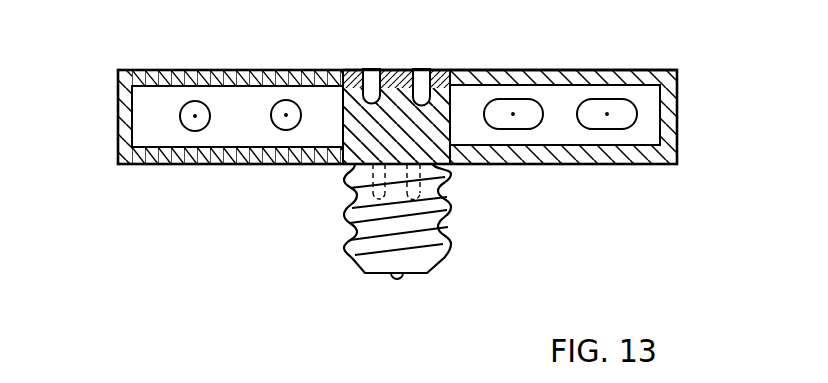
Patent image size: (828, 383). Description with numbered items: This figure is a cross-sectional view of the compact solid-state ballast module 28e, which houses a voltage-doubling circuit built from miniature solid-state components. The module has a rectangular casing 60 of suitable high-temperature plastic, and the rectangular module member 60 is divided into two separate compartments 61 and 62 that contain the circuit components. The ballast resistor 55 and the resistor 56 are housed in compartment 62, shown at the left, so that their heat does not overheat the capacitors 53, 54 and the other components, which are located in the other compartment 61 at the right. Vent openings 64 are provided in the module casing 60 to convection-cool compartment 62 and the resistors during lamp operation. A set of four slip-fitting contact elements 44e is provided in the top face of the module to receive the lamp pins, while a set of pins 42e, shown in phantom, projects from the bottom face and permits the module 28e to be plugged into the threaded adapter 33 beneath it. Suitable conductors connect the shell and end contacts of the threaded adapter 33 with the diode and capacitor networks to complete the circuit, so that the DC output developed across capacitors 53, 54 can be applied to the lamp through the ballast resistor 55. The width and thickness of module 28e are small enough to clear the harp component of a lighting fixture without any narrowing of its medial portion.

The ballast module 28e is at (230, 319).
The threaded adapter 33 is at (445, 243).
The pins 42e is at (358, 199).
The slip-fitting contact elements 44e is at (412, 90).
The capacitor 53 is at (505, 106).
The capacitor 54 is at (628, 110).
The ballast resistor 55 is at (283, 102).
The resistor 56 is at (197, 103).
The rectangular casing 60 is at (397, 111).
The compartment 61 is at (597, 92).
The compartment 62 is at (157, 102).
The vent openings 64 is at (182, 77).